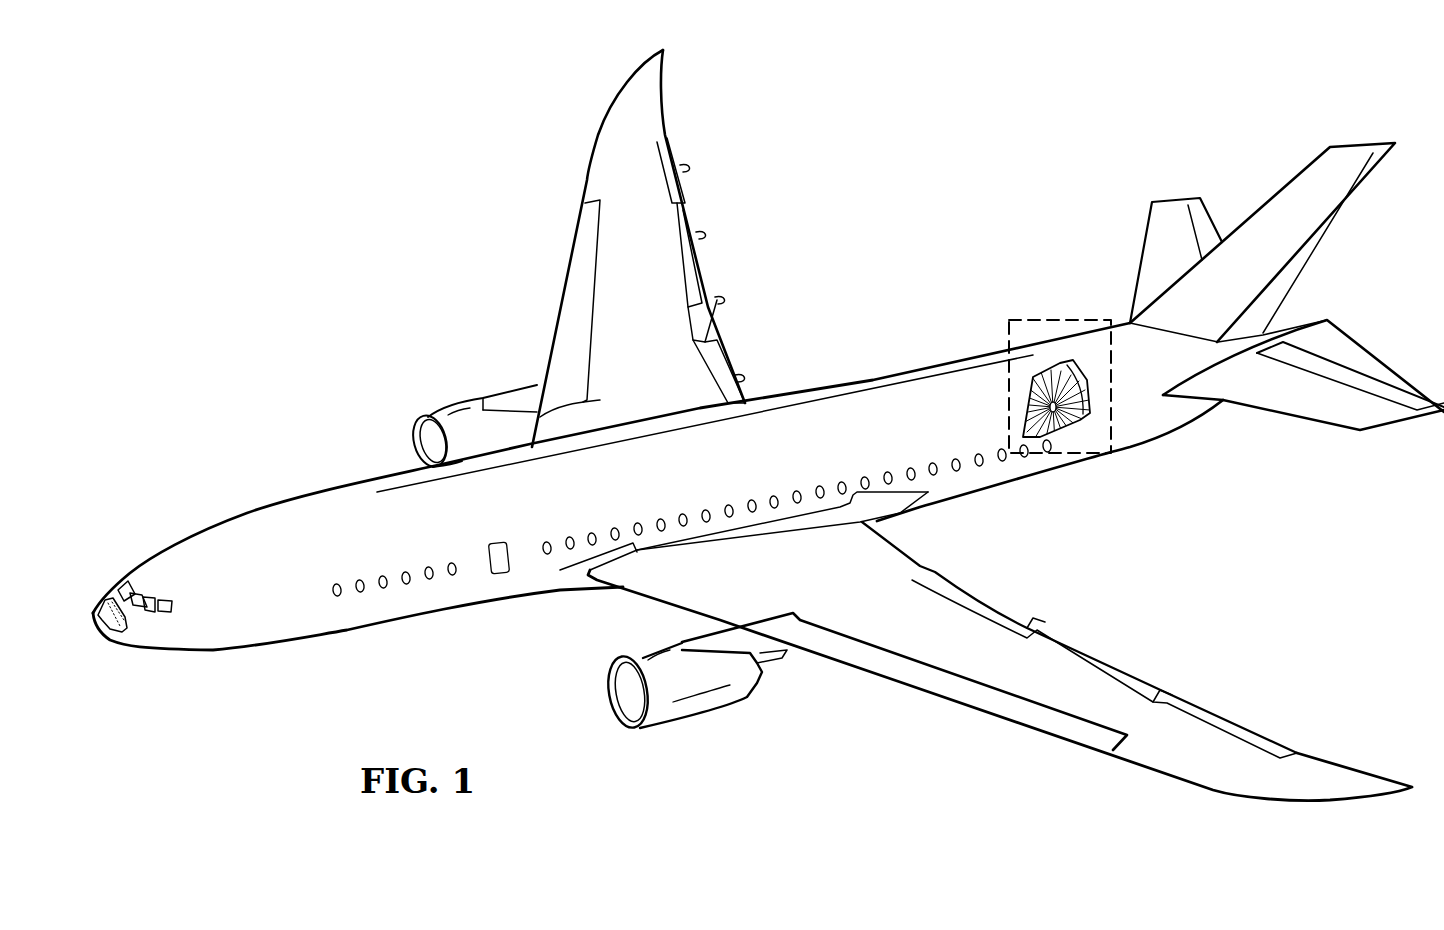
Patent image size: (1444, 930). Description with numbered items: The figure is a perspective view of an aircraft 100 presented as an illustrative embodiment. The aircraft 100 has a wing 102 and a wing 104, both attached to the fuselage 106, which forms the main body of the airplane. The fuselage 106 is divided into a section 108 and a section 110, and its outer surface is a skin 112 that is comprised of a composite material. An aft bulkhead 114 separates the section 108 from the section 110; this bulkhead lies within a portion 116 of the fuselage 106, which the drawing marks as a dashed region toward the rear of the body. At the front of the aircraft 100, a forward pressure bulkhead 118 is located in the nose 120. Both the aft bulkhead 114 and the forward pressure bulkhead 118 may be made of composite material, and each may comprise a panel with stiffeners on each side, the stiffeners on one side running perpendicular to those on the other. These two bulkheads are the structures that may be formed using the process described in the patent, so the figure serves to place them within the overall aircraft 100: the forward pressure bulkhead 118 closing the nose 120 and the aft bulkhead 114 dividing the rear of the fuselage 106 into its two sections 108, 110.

The aircraft 100 is at (378, 190).
The wing 102 is at (662, 85).
The wing 104 is at (1338, 783).
The fuselage 106 is at (873, 405).
The section 108 is at (1337, 323).
The section 110 is at (1045, 500).
The skin 112 is at (957, 350).
The aft bulkhead 114 is at (1077, 421).
The portion 116 is at (1073, 314).
The forward pressure bulkhead 118 is at (110, 633).
The nose 120 is at (93, 613).